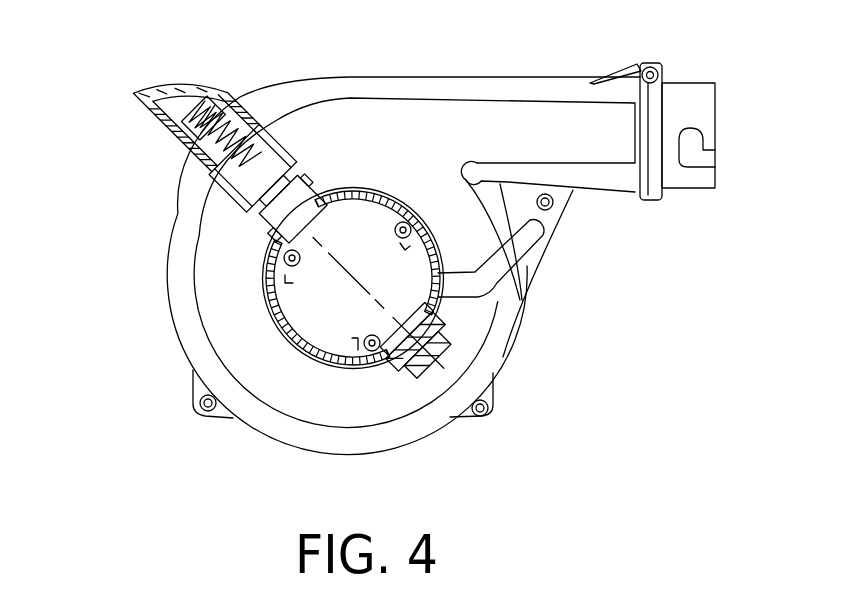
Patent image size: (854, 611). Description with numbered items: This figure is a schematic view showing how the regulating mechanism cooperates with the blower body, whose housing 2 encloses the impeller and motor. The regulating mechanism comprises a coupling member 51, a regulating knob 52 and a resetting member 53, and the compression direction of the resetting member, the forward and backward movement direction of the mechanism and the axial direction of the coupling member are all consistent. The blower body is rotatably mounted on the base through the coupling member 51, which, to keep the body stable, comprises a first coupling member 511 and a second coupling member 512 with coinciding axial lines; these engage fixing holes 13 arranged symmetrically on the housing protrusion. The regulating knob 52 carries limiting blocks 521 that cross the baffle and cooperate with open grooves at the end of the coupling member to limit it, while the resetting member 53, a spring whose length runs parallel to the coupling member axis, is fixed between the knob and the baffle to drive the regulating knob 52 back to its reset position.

The housing 2 is at (245, 328).
The fixing holes 13 is at (437, 316).
The coupling member 51 is at (335, 206).
The first coupling member 511 is at (293, 210).
The second coupling member 512 is at (417, 343).
The regulating knob 52 is at (197, 110).
The limiting blocks 521 is at (256, 171).
The resetting member 53 is at (228, 137).